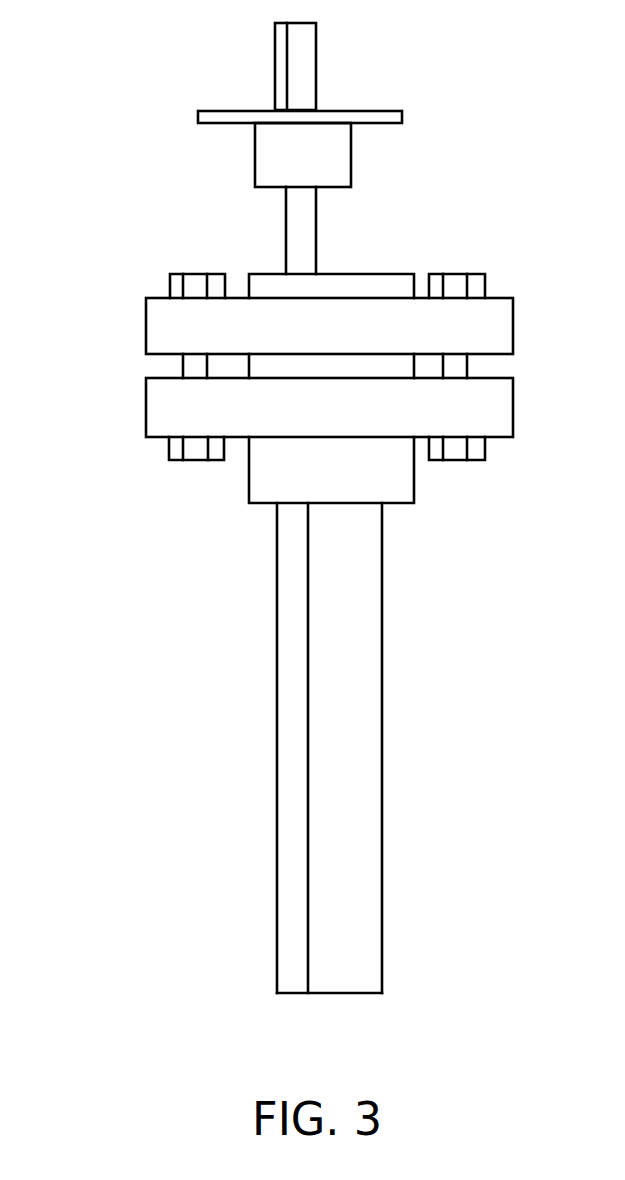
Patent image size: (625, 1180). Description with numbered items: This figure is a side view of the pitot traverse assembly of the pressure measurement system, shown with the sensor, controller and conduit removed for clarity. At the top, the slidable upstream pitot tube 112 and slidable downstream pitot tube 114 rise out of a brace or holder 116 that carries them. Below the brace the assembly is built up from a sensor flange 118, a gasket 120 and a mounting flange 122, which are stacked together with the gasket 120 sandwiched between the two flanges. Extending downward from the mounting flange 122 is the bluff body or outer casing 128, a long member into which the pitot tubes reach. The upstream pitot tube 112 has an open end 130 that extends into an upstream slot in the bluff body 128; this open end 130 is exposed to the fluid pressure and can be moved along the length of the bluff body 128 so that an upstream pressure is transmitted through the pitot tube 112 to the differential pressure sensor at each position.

The slidable upstream pitot tube 112 is at (316, 55).
The slidable downstream pitot tube 114 is at (275, 65).
The brace or holder 116 is at (198, 122).
The sensor flange 118 is at (146, 310).
The gasket 120 is at (250, 365).
The mounting flange 122 is at (146, 398).
The bluff body or outer casing 128 is at (382, 632).
The open end 130 is at (277, 985).